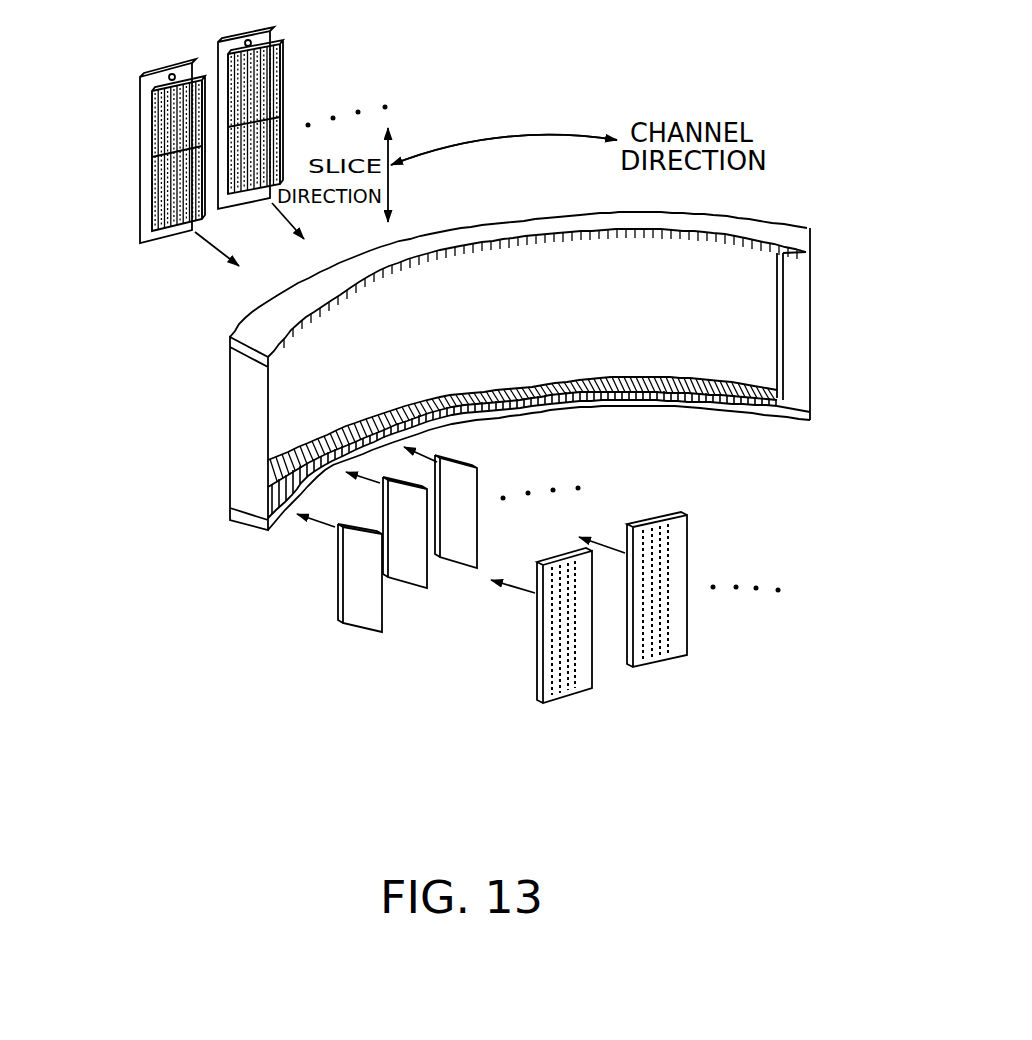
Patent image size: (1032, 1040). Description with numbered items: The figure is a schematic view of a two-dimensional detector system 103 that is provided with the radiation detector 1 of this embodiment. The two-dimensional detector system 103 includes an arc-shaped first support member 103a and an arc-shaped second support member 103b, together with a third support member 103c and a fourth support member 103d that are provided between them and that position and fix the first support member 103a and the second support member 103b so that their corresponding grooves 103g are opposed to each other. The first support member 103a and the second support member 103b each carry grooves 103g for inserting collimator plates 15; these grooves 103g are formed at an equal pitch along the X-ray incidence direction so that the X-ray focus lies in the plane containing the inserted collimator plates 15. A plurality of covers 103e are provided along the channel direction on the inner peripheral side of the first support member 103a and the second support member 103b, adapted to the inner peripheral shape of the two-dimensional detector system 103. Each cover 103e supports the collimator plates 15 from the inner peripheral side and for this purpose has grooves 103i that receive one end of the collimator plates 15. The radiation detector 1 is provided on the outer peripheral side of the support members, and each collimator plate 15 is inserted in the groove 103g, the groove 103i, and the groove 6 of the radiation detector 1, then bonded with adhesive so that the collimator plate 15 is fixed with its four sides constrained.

The radiation detector 1 is at (104, 136).
The groove 6 is at (147, 198).
The collimator plate 15 is at (358, 612).
The two-dimensional detector system 103 is at (150, 378).
The first support member 103a is at (760, 226).
The second support member 103b is at (803, 413).
The third support member 103c is at (800, 323).
The fourth support member 103d is at (250, 413).
The cover 103e is at (537, 701).
The grooves 103g is at (310, 298).
The grooves 103i is at (550, 645).